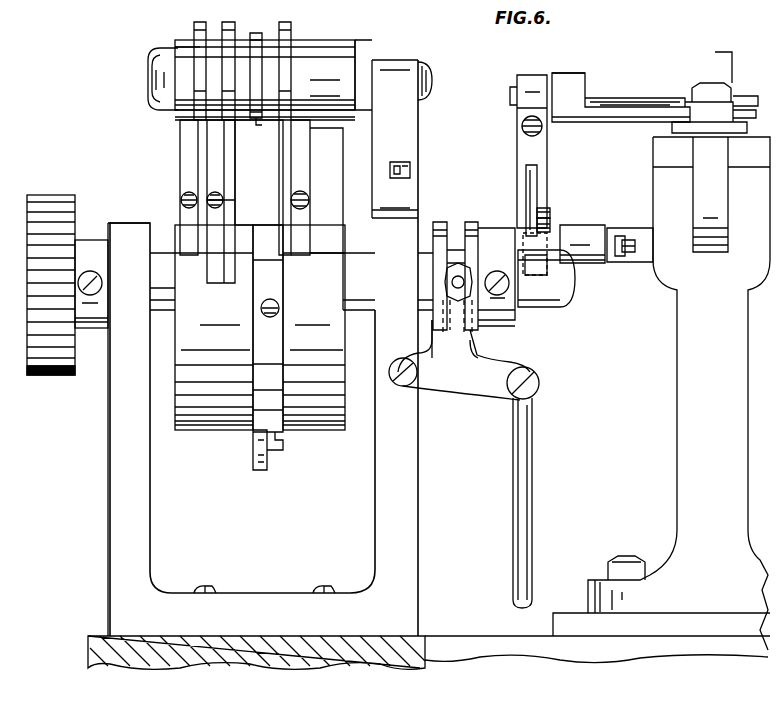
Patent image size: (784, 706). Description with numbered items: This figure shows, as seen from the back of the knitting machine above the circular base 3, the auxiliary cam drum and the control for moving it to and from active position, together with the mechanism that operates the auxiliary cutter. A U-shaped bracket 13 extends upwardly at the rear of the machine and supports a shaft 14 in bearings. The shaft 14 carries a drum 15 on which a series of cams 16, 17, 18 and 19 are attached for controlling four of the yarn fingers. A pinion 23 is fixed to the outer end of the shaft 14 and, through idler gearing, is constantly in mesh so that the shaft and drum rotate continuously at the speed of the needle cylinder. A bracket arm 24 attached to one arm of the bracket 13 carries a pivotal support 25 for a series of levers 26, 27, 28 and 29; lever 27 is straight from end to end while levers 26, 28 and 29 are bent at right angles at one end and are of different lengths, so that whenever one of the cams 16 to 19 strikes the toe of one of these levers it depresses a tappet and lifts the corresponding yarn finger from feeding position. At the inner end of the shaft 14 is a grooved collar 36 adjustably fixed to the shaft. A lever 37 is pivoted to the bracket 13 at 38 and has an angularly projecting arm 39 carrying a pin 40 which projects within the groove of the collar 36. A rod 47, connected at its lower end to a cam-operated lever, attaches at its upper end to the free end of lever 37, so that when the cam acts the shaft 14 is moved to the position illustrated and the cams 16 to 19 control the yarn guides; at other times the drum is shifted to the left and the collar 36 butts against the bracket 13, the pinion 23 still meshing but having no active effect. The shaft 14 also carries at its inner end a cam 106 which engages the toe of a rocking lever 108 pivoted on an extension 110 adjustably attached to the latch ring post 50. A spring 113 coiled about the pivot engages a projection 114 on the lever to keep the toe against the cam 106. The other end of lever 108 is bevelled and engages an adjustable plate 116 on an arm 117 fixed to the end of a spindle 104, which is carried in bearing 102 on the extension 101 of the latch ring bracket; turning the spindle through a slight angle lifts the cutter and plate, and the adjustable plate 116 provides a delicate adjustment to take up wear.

The circular base 3 is at (97, 648).
The U-shaped bracket 13 is at (256, 598).
The shaft 14 is at (162, 258).
The drum 15 is at (314, 327).
The cam 16 is at (300, 180).
The cam 17 is at (253, 308).
The cam 18 is at (233, 188).
The cam 19 is at (196, 148).
The pinion 23 is at (56, 196).
The bracket arm 24 is at (418, 142).
The pivotal support 25 is at (273, 80).
The lever 26 is at (291, 45).
The lever 27 is at (256, 120).
The lever 28 is at (165, 62).
The lever 29 is at (200, 42).
The grooved collar 36 is at (444, 224).
The lever 37 is at (464, 360).
The pivot 38 is at (410, 384).
The angularly projecting arm 39 is at (470, 335).
The pin 40 is at (458, 283).
The rod 47 is at (532, 430).
The latch ring post 50 is at (677, 466).
The bracket extension 101 is at (636, 114).
The bearing 102 is at (572, 80).
The spindle 104 is at (635, 86).
The cam 106 is at (542, 268).
The rocking lever 108 is at (537, 183).
The extension 110 is at (615, 233).
The spring 113 is at (552, 228).
The projection 114 is at (552, 211).
The adjustable plate 116 is at (547, 140).
The arm 117 is at (530, 78).